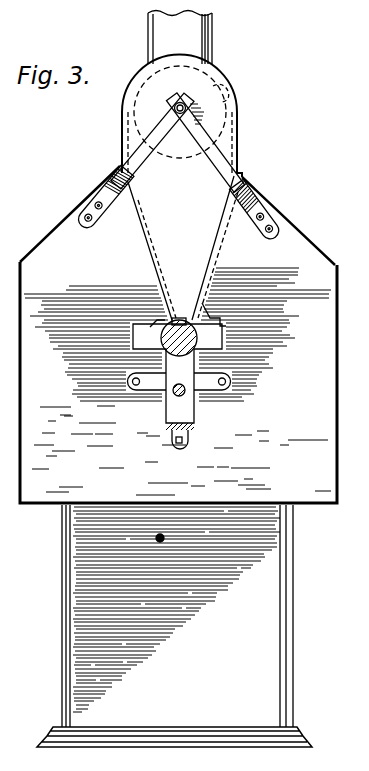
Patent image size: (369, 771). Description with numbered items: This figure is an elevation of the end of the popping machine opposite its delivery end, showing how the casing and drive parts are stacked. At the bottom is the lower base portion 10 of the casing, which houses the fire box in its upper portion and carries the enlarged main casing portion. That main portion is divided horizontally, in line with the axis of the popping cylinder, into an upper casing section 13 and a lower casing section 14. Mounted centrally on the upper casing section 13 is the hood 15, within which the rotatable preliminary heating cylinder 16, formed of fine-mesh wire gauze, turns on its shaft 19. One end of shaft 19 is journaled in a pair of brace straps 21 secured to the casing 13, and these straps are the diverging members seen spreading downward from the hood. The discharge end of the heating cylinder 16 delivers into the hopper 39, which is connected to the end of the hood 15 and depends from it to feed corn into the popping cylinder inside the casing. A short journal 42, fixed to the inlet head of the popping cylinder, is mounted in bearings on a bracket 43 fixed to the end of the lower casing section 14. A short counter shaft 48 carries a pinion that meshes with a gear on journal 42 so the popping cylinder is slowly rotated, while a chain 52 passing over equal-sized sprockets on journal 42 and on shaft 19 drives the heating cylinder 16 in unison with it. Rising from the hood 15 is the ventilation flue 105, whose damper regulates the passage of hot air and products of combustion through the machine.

The lower base portion 10 is at (63, 600).
The upper casing section 13 is at (177, 227).
The lower casing section 14 is at (178, 382).
The hood 15 is at (238, 108).
The preliminary heating cylinder 16 is at (228, 95).
The shaft 19 is at (186, 108).
The brace straps 21 is at (217, 173).
The hopper 39 is at (183, 248).
The journal 42 is at (197, 345).
The bracket 43 is at (233, 406).
The counter shaft 48 is at (139, 407).
The chain 52 is at (165, 323).
The ventilation flue 105 is at (210, 50).